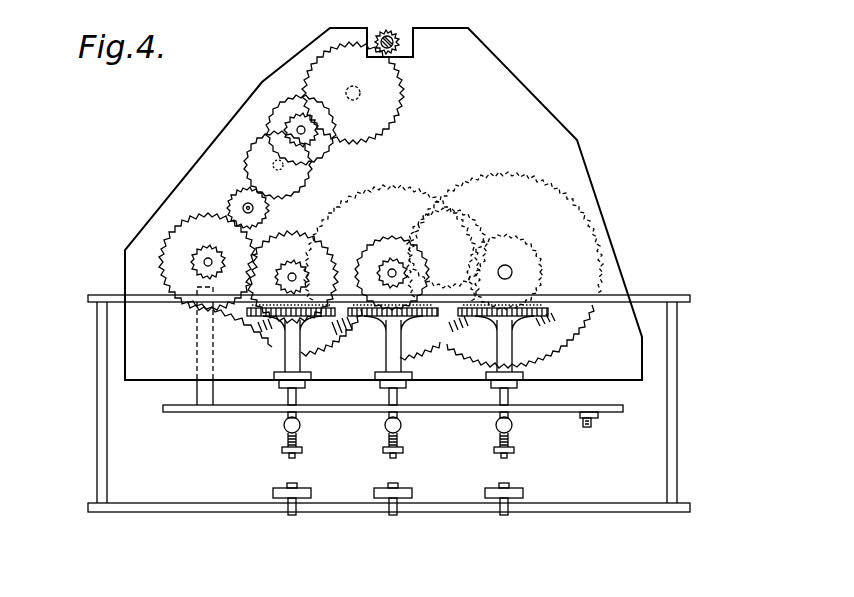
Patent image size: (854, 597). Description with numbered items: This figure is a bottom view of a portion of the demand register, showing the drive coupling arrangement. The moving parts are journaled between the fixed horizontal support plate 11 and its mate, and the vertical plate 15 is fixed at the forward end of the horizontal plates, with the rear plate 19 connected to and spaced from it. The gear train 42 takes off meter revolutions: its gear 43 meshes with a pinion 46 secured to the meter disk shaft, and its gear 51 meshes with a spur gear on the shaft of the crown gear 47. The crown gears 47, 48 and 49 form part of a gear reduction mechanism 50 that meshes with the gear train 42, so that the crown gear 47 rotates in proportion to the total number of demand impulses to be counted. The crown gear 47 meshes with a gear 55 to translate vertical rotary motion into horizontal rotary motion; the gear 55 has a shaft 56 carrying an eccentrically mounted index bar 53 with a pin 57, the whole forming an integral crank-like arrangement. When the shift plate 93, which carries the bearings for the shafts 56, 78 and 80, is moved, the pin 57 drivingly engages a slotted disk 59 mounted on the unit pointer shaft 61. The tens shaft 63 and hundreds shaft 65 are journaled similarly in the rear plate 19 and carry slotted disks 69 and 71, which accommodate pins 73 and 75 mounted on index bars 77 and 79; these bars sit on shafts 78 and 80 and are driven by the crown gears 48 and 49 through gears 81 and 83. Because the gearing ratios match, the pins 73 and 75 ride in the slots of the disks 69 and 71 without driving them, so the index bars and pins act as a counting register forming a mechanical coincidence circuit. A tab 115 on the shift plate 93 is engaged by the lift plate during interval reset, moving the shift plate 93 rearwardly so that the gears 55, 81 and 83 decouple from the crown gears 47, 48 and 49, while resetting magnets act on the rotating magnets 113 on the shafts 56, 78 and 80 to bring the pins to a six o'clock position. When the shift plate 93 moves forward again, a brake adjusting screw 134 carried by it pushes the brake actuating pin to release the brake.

The horizontal support plate 11 is at (556, 126).
The vertical plate 15 is at (655, 297).
The rear plate 19 is at (128, 513).
The gear train 42 is at (258, 118).
The gear 43 is at (405, 93).
The pinion 46 is at (396, 34).
The crown gear 47 is at (302, 242).
The crown gear 48 is at (392, 272).
The crown gear 49 is at (521, 271).
The gear reduction mechanism 50 is at (452, 185).
The gear 51 is at (184, 240).
The index bar 53 is at (302, 426).
The gear 55 is at (262, 340).
The shaft 56 is at (305, 392).
The pin 57 is at (282, 452).
The disk 59 is at (280, 497).
The unit pointer shaft 61 is at (294, 514).
The tens shaft 63 is at (397, 514).
The hundreds shaft 65 is at (508, 514).
The disk 69 is at (380, 497).
The disk 71 is at (490, 497).
The pin 73 is at (384, 452).
The pin 75 is at (494, 452).
The index bar 77 is at (403, 426).
The shaft 78 is at (406, 392).
The index bar 79 is at (514, 426).
The shaft 80 is at (517, 392).
The gear 81 is at (352, 342).
The gear 83 is at (537, 325).
The shift plate 93 is at (218, 413).
The rotating magnet 113 is at (493, 382).
The tab 115 is at (195, 392).
The brake adjusting screw 134 is at (598, 420).